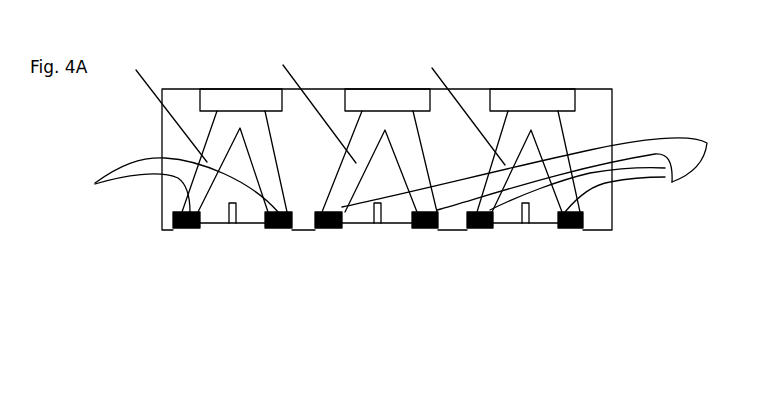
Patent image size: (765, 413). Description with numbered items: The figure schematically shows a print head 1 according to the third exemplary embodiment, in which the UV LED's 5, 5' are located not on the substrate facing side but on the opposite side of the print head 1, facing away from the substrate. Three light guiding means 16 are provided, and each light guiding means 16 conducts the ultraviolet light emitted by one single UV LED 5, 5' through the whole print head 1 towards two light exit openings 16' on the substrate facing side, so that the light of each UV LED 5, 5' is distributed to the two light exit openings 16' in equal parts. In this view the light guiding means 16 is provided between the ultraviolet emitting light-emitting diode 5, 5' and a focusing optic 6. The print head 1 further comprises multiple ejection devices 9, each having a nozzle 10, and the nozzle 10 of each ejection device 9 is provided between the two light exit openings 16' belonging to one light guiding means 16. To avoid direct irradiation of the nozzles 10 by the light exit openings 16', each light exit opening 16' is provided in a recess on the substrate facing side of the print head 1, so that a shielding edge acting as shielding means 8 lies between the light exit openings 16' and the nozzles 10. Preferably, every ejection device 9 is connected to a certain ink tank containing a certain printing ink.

The print head 1 is at (597, 58).
The UV LED 5 is at (381, 126).
The UV LED 5' is at (381, 150).
The focusing optic 6 is at (595, 337).
The shielding means 8 is at (202, 230).
The ejection device 9 is at (229, 230).
The nozzle 10 is at (379, 213).
The light guiding means 16 is at (320, 102).
The light exit opening 16' is at (382, 176).